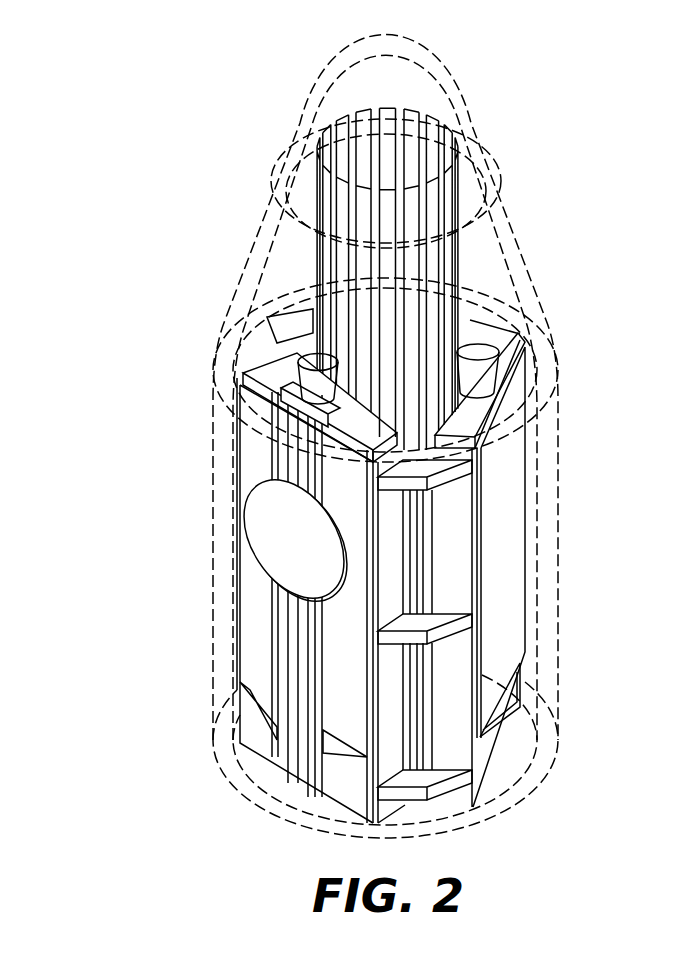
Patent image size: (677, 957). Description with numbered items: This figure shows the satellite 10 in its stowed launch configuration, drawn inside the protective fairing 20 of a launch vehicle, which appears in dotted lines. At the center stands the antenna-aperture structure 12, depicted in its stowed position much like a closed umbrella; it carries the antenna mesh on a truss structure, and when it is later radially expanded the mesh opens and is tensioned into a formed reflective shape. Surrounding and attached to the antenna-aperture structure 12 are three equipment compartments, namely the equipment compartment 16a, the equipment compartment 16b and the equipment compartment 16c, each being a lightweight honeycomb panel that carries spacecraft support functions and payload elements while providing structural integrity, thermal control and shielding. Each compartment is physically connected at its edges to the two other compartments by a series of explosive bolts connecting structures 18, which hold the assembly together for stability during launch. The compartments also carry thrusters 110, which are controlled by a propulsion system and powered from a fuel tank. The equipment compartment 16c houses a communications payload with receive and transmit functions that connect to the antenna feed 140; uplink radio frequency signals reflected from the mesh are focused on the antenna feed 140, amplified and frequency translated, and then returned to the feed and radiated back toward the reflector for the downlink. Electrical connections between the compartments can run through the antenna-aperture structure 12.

The satellite 10 is at (392, 531).
The antenna-aperture structure 12 is at (452, 250).
The equipment compartment 16a is at (507, 457).
The equipment compartment 16b is at (293, 310).
The equipment compartment 16c is at (238, 578).
The explosive bolts connecting structures 18 is at (445, 478).
The fairing 20 is at (560, 578).
The thrusters 110 is at (505, 333).
The antenna feed 140 is at (273, 526).